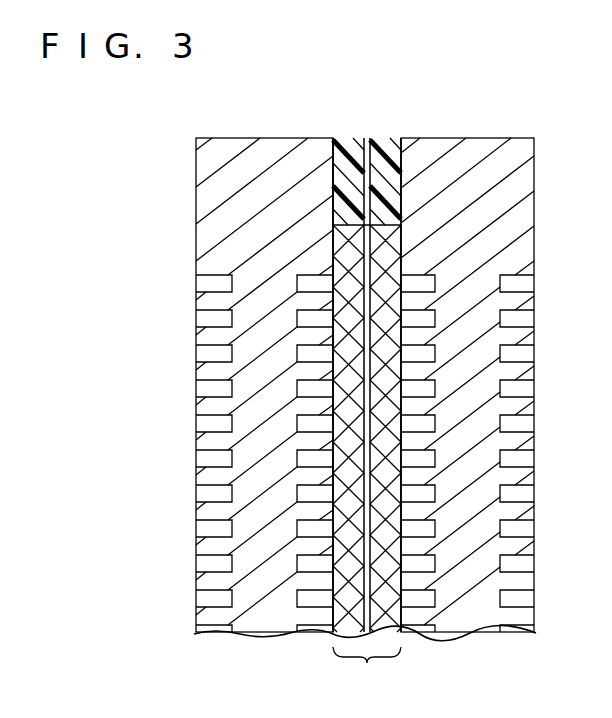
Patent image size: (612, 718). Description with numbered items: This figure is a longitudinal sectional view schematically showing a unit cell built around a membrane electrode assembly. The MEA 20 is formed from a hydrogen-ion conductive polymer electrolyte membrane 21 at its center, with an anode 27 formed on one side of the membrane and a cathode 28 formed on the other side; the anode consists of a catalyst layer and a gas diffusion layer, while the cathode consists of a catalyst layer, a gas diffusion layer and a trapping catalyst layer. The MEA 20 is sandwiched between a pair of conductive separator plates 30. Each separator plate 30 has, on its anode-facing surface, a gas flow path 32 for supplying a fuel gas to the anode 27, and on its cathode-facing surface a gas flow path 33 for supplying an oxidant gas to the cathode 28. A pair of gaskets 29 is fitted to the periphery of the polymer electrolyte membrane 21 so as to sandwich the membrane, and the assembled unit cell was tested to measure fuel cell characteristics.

The MEA 20 is at (367, 420).
The hydrogen-ion conductive polymer electrolyte membrane 21 is at (369, 139).
The anode 27 is at (340, 584).
The cathode 28 is at (382, 597).
The gaskets 29 is at (353, 150).
The conductive separator plates 30 is at (252, 163).
The gas flow path 32 is at (315, 494).
The gas flow path 33 is at (212, 317).